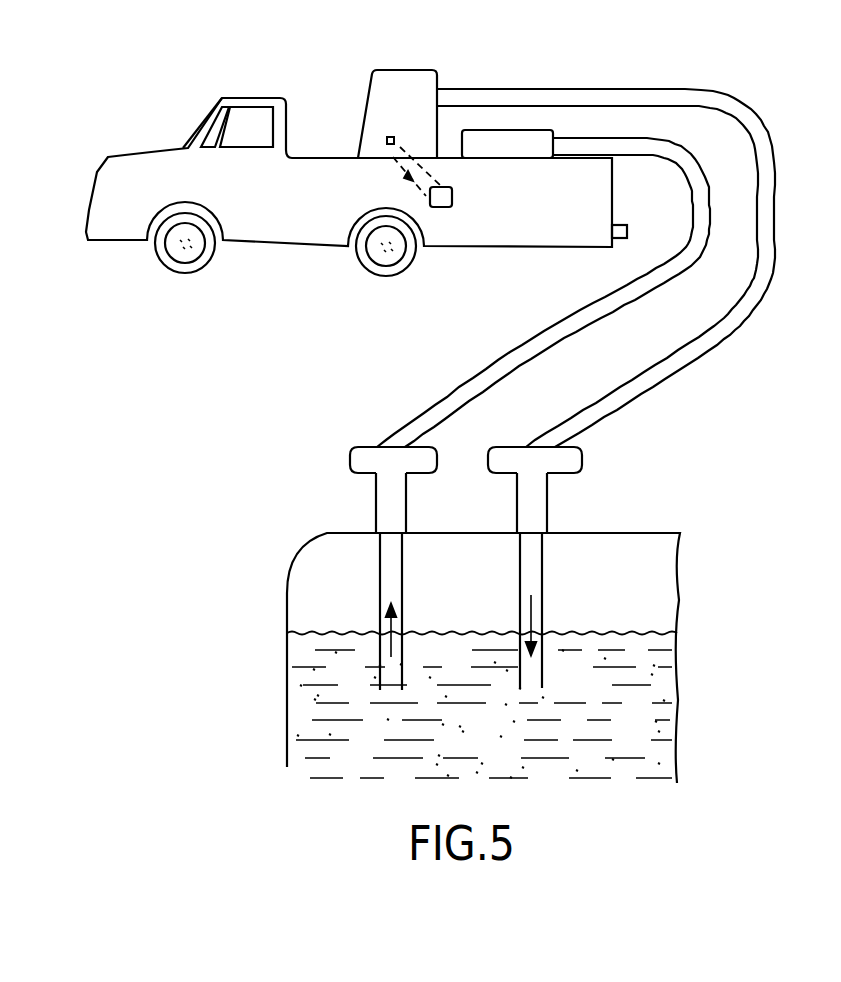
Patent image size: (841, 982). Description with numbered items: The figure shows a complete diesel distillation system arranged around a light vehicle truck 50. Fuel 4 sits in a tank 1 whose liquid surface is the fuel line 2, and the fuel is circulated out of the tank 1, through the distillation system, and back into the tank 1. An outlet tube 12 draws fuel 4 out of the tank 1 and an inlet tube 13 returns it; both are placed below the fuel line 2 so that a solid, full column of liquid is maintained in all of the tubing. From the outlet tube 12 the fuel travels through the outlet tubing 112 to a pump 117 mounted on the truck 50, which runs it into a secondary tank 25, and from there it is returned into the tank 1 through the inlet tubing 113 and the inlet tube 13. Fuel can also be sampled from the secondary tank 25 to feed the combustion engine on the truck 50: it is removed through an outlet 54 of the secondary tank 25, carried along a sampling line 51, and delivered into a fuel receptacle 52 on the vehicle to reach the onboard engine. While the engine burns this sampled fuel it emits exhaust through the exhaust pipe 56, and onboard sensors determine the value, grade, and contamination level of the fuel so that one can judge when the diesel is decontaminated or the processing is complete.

The tank 1 is at (287, 630).
The fuel line 2 is at (677, 632).
The fuel 4 is at (487, 740).
The outlet tube 12 is at (378, 580).
The inlet tube 13 is at (545, 580).
The secondary tank 25 is at (393, 70).
The truck 50 is at (348, 213).
The sampling line 51 is at (408, 155).
The fuel receptacle 52 is at (453, 198).
The outlet 54 is at (386, 140).
The exhaust pipe 56 is at (625, 225).
The outlet tubing 112 is at (483, 368).
The inlet tubing 113 is at (653, 378).
The pump 117 is at (520, 128).